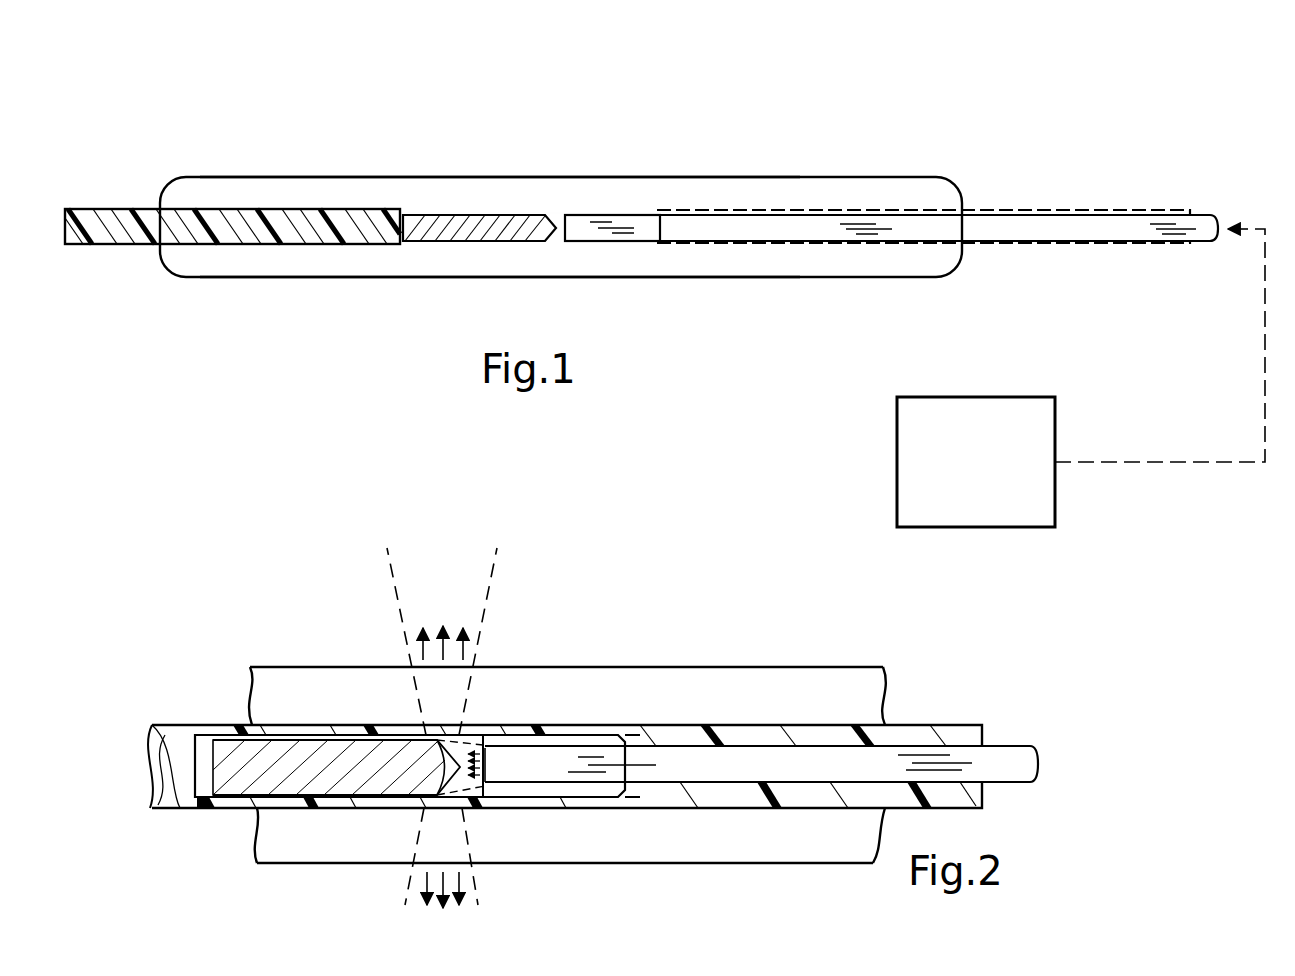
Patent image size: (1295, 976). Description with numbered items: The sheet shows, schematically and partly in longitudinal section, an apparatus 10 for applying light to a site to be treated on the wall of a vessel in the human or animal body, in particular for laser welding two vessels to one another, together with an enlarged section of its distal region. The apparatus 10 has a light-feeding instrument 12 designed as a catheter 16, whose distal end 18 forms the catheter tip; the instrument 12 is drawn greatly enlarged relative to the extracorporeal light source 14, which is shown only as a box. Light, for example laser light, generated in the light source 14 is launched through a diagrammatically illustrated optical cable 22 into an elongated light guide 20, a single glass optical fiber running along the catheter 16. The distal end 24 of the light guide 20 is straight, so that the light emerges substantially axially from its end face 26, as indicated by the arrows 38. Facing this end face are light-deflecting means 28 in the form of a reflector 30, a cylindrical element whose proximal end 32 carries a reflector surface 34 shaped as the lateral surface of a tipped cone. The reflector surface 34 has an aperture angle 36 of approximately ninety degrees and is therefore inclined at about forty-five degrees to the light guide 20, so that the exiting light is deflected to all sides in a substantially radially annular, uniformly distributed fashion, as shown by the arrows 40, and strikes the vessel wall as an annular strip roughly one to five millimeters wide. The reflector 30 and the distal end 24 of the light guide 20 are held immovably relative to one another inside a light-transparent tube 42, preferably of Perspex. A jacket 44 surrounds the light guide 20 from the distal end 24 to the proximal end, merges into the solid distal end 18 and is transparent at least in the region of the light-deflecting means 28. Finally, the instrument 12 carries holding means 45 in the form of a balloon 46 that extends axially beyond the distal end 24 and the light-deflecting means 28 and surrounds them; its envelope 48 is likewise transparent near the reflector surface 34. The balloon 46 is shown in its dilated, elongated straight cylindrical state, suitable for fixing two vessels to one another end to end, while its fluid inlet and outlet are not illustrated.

In FIG. 1, the apparatus 10 is at (800, 368).
In FIG. 1, the light-feeding instrument 12 is at (290, 128).
In FIG. 1, the light source 14 is at (990, 397).
In FIG. 1, the catheter 16 is at (507, 160).
In FIG. 1, the distal end of the catheter 18 is at (101, 243).
In FIG. 1, the light guide 20 is at (995, 225).
In FIG. 2, the light guide 20 is at (805, 767).
In FIG. 1, the optical cable 22 is at (1163, 462).
In FIG. 1, the distal end of the light guide 24 is at (613, 232).
In FIG. 2, the distal end of the light guide 24 is at (560, 782).
In FIG. 1, the end face of the light guide 26 is at (553, 214).
In FIG. 2, the end face of the light guide 26 is at (485, 800).
In FIG. 2, the light-deflecting means 28 is at (401, 713).
In FIG. 2, the reflector 30 is at (337, 775).
In FIG. 2, the proximal end of the reflector 32 is at (415, 767).
In FIG. 2, the reflector surface 34 is at (468, 752).
In FIG. 2, the aperture angle 36 is at (445, 765).
In FIG. 2, the arrows indicating exiting light 38 is at (487, 742).
In FIG. 2, the arrows indicating reflected light 40 is at (442, 655).
In FIG. 1, the tube 42 is at (398, 176).
In FIG. 2, the tube 42 is at (628, 792).
In FIG. 1, the jacket 44 is at (1095, 243).
In FIG. 1, the holding means 45 is at (738, 172).
In FIG. 1, the balloon 46 is at (270, 262).
In FIG. 2, the balloon 46 is at (725, 700).
In FIG. 1, the envelope 48 is at (352, 278).
In FIG. 2, the envelope 48 is at (662, 667).